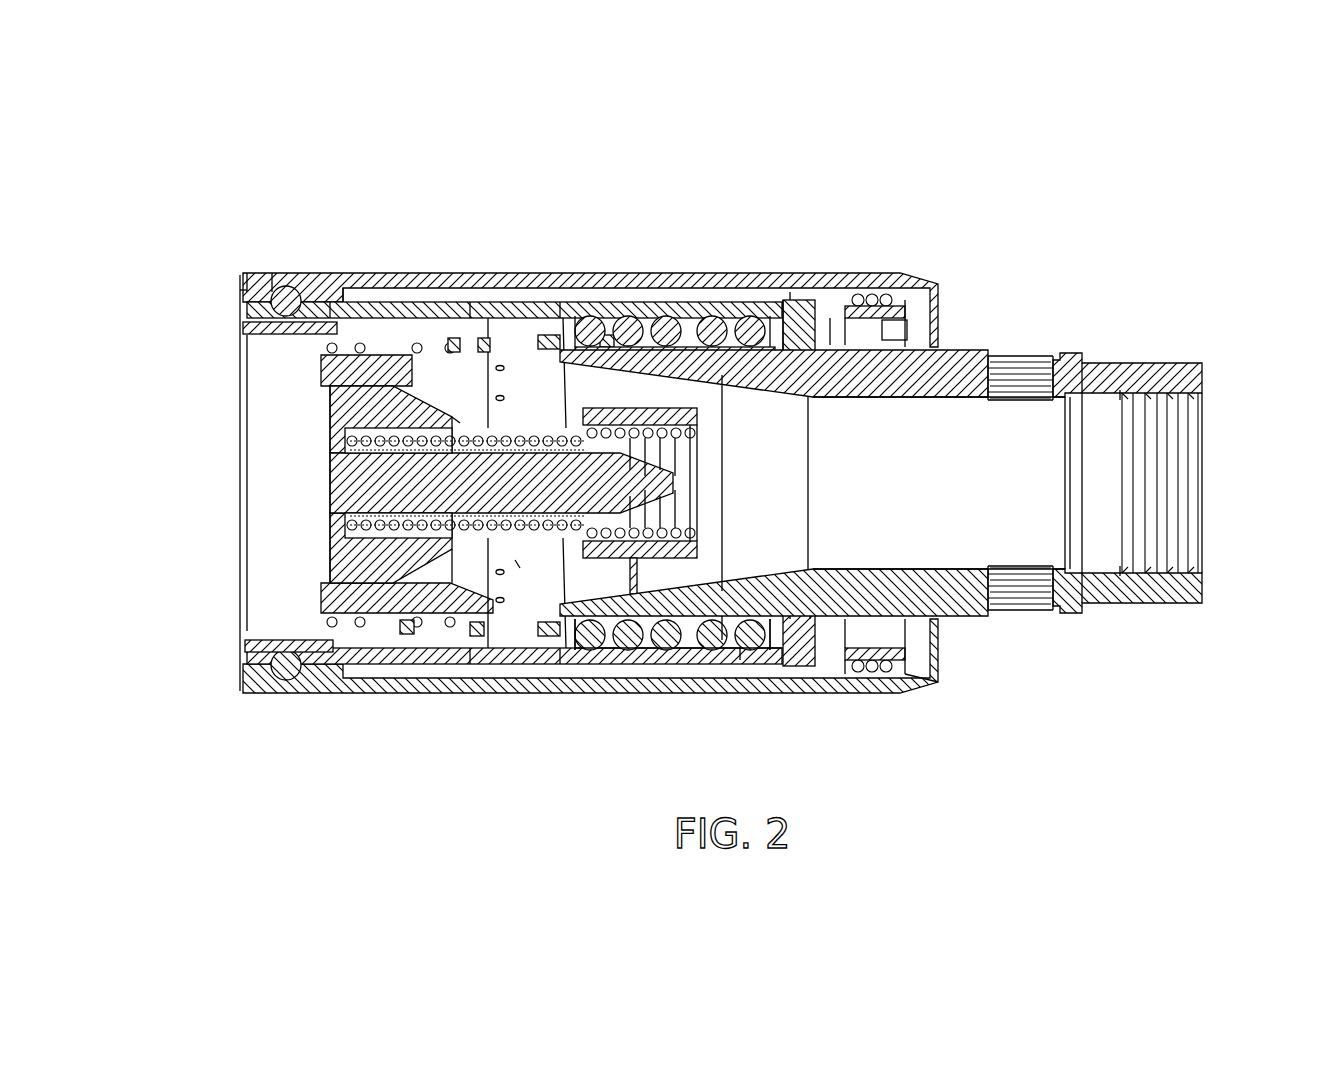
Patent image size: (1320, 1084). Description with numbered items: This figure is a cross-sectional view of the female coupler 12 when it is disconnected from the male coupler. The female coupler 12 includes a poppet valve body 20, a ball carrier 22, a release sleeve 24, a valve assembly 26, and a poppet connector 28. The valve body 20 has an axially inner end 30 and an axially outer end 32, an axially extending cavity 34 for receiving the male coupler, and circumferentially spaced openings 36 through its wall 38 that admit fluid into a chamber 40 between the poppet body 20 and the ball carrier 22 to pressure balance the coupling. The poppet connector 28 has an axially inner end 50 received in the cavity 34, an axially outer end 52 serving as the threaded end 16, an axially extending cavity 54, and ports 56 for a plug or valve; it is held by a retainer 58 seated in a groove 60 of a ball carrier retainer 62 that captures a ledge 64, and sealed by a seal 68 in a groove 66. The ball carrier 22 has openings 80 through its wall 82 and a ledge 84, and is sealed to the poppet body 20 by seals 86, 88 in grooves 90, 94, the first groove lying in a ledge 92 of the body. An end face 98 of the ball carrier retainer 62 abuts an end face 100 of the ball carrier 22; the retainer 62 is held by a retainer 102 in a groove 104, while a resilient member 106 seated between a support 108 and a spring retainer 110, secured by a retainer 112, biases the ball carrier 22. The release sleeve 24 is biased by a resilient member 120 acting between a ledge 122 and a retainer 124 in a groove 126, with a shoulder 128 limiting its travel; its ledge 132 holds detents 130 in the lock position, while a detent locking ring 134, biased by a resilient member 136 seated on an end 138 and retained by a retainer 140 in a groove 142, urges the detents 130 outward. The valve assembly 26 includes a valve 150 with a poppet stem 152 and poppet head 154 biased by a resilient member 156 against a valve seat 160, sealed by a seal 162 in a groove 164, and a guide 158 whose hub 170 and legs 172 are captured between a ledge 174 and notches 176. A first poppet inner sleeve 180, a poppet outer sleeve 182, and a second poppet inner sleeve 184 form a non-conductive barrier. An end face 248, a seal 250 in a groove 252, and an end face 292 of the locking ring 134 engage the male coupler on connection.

The female coupler 12 is at (1122, 190).
The threaded end 16 is at (1205, 480).
The poppet valve body 20 is at (660, 347).
The ball carrier 22 is at (400, 306).
The release sleeve 24 is at (372, 278).
The valve assembly 26 is at (523, 568).
The poppet connector 28 is at (960, 592).
The axially inner end 30 is at (322, 593).
The axially outer end 32 is at (850, 340).
The axially extending cavity 34 is at (525, 401).
The circumferentially spaced openings 36 is at (510, 318).
The wall 38 is at (560, 345).
The chamber 40 is at (545, 335).
The axially inner end 50 is at (662, 408).
The axially outer end 52 is at (1203, 368).
The axially extending cavity 54 is at (934, 481).
The ports 56 is at (1025, 356).
The retainer 58 is at (907, 330).
The groove 60 is at (905, 300).
The ball carrier retainer 62 is at (895, 302).
The ledge 64 is at (848, 672).
The groove 66 is at (790, 345).
The seal 68 is at (812, 345).
The circumferentially spaced openings 80 is at (258, 280).
The wall 82 is at (330, 302).
The ledge 84 is at (585, 432).
The seal 86 is at (490, 622).
The seal 88 is at (562, 650).
The groove 90 is at (480, 638).
The ledge 92 is at (410, 636).
The groove 94 is at (540, 638).
The end face 98 is at (725, 347).
The end face 100 is at (786, 330).
The retainer 102 is at (830, 640).
The groove 104 is at (800, 645).
The resilient member 106 is at (640, 650).
The support 108 is at (600, 655).
The spring retainer 110 is at (740, 655).
The retainer 112 is at (790, 650).
The resilient member 120 is at (858, 658).
The ledge 122 is at (838, 330).
The retainer 124 is at (905, 660).
The groove 126 is at (938, 680).
The shoulder 128 is at (800, 320).
The detents 130 is at (290, 674).
The ledge 132 is at (300, 652).
The detent locking ring 134 is at (272, 288).
The resilient member 136 is at (378, 628).
The end 138 is at (348, 300).
The retainer 140 is at (333, 632).
The groove 142 is at (322, 328).
The valve 150 is at (485, 338).
The poppet stem 152 is at (453, 570).
The poppet head 154 is at (456, 418).
The resilient member 156 is at (606, 334).
The guide 158 is at (634, 428).
The valve seat 160 is at (333, 445).
The seal 162 is at (355, 602).
The groove 164 is at (390, 342).
The hub 170 is at (640, 420).
The legs 172 is at (665, 640).
The ledge 174 is at (628, 575).
The notches 176 is at (648, 594).
The first poppet inner sleeve 180 is at (592, 428).
The poppet outer sleeve 182 is at (455, 338).
The second poppet inner sleeve 184 is at (676, 428).
The end face 248 is at (322, 363).
The seal 250 is at (293, 290).
The groove 252 is at (332, 392).
The end face 292 is at (240, 290).